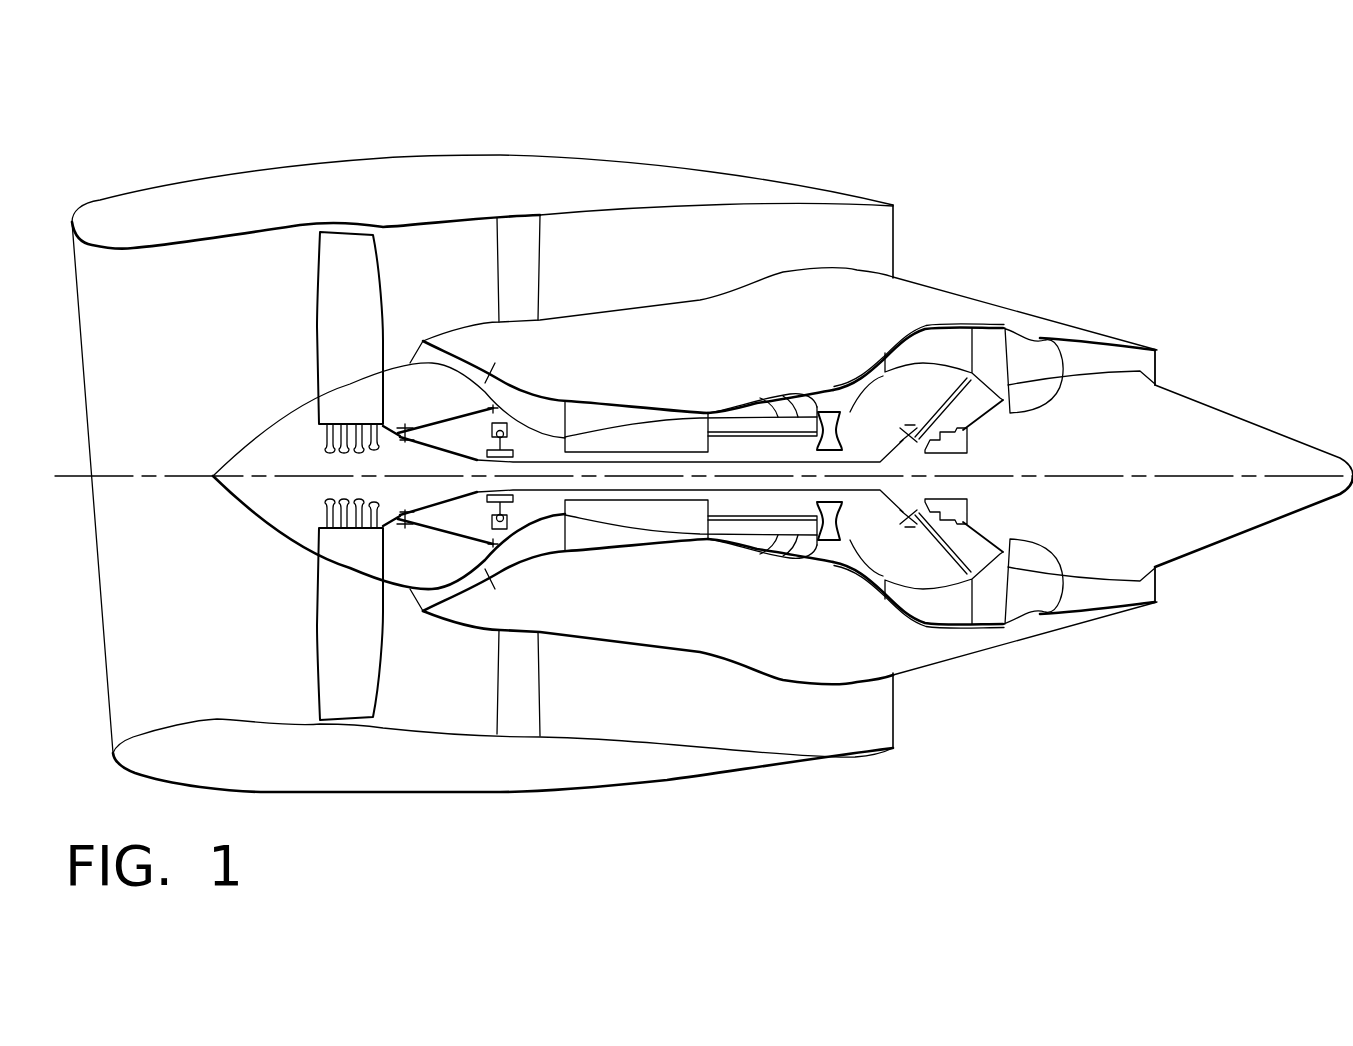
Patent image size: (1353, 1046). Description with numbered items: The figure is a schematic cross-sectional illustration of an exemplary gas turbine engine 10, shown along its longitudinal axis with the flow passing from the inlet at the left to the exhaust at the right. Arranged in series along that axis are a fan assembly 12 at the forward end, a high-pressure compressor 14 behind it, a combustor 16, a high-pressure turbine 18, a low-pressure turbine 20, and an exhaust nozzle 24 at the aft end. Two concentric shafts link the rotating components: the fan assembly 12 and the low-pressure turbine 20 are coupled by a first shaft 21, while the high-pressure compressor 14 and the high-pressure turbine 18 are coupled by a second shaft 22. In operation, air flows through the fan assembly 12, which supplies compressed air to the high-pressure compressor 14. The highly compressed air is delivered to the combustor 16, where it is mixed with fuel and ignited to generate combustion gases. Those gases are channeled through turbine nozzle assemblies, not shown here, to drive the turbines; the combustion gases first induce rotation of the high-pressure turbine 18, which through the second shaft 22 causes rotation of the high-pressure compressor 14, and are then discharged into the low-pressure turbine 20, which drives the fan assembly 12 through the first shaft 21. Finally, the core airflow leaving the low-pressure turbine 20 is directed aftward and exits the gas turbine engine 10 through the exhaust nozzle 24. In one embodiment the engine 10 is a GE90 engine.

The gas turbine engine 10 is at (870, 78).
The fan assembly 12 is at (352, 620).
The high-pressure compressor 14 is at (597, 412).
The combustor 16 is at (783, 413).
The high-pressure turbine 18 is at (822, 568).
The low-pressure turbine 20 is at (930, 345).
The first shaft 21 is at (443, 450).
The second shaft 22 is at (740, 425).
The exhaust nozzle 24 is at (1122, 340).